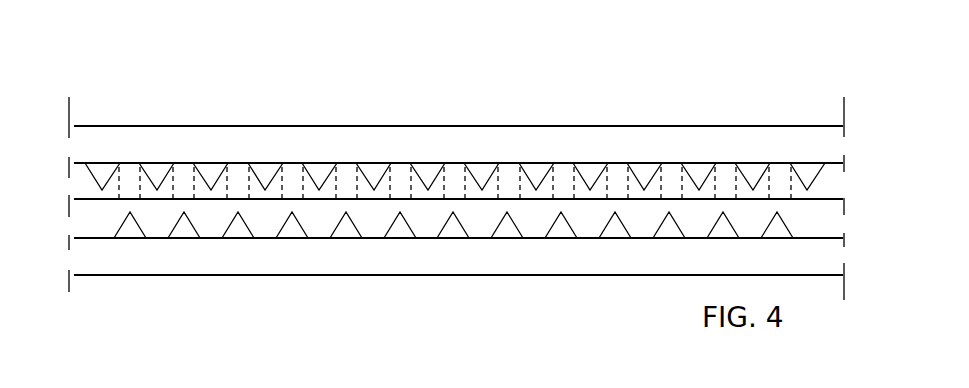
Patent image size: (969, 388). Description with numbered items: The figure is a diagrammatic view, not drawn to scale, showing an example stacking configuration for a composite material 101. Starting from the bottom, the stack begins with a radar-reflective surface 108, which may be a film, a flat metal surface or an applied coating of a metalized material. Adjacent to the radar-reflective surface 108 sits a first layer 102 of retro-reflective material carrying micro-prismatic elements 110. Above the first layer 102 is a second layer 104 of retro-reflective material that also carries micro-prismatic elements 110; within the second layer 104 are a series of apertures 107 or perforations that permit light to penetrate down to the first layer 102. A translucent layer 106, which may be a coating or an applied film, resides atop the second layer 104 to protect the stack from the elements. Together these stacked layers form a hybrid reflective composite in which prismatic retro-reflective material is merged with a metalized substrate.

The composite material 101 is at (776, 86).
The first layer 102 is at (363, 217).
The second layer 104 is at (148, 190).
The translucent layer 106 is at (119, 137).
The apertures 107 is at (184, 162).
The radar-reflective surface 108 is at (173, 272).
The micro-prismatic elements 110 is at (262, 180).